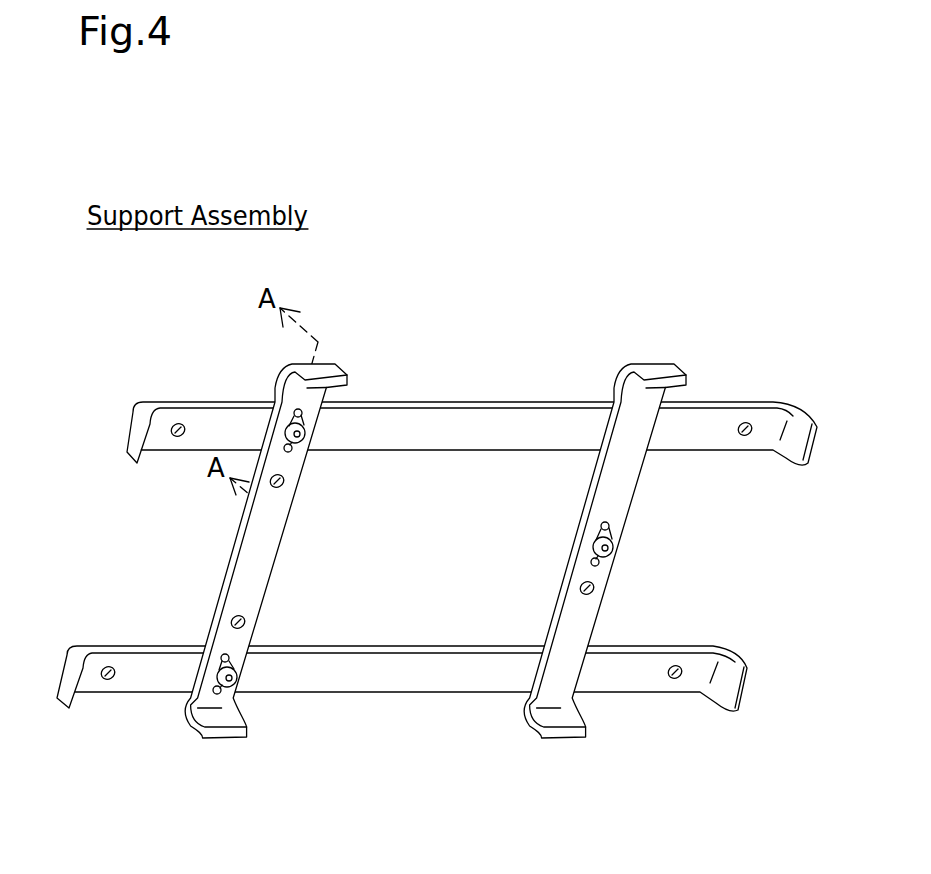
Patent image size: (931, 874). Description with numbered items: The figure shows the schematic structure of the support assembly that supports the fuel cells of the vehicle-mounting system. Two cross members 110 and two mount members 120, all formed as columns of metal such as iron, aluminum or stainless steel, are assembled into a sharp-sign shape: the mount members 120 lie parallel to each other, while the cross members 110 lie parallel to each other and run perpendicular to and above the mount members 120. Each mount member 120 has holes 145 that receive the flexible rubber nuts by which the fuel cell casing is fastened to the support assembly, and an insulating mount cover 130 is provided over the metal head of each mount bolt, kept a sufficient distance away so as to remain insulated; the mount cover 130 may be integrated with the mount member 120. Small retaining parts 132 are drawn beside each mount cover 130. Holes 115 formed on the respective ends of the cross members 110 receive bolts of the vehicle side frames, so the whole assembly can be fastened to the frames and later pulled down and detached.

The cross member 110 is at (130, 470).
The hole 115 is at (178, 421).
The mount member 120 is at (228, 739).
The mount cover 130 is at (306, 437).
The fastener retainer 132 is at (284, 447).
The hole 145 is at (283, 487).